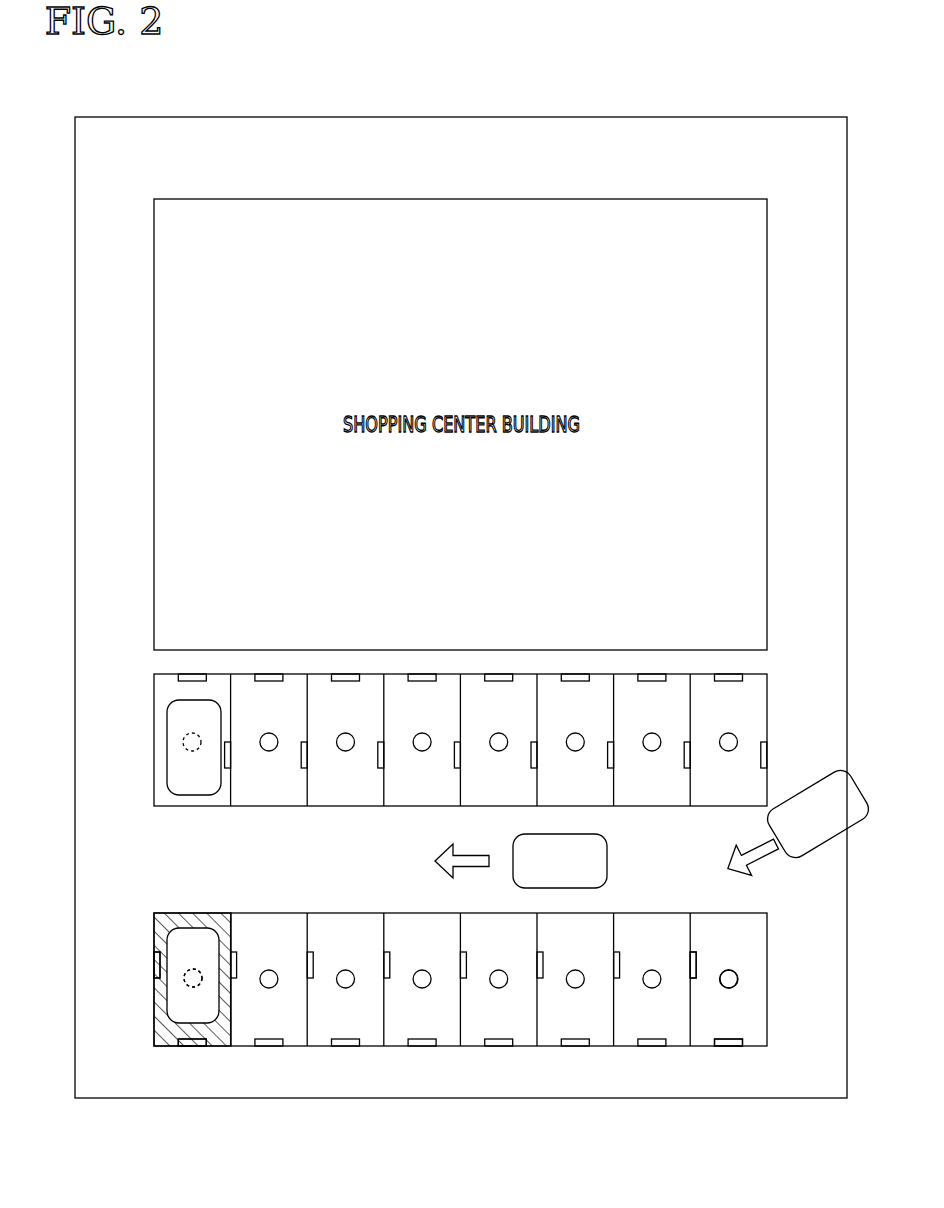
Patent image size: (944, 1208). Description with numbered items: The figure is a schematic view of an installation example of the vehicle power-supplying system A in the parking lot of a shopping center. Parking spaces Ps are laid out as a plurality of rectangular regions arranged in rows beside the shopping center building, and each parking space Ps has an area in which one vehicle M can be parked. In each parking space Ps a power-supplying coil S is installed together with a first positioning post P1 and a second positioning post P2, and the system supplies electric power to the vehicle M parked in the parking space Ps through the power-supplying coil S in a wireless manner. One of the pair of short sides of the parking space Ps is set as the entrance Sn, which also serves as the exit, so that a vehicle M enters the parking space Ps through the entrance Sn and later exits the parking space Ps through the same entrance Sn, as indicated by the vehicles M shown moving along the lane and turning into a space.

The vehicle M is at (167, 737).
The parking space Ps is at (154, 940).
The entrance Sn is at (168, 913).
The vehicle power-supplying system A is at (230, 901).
The power-supplying coil S is at (738, 979).
The first positioning post P1 is at (193, 1046).
The second positioning post P2 is at (154, 965).